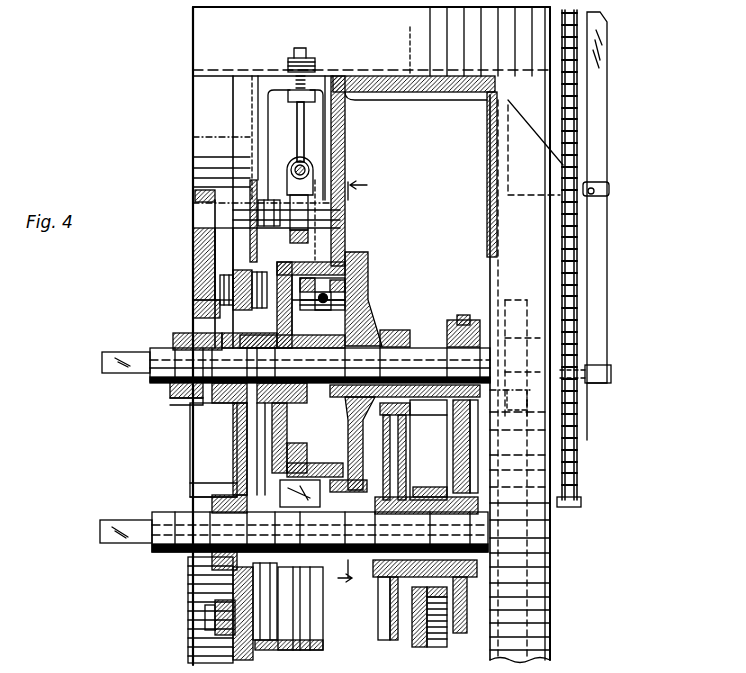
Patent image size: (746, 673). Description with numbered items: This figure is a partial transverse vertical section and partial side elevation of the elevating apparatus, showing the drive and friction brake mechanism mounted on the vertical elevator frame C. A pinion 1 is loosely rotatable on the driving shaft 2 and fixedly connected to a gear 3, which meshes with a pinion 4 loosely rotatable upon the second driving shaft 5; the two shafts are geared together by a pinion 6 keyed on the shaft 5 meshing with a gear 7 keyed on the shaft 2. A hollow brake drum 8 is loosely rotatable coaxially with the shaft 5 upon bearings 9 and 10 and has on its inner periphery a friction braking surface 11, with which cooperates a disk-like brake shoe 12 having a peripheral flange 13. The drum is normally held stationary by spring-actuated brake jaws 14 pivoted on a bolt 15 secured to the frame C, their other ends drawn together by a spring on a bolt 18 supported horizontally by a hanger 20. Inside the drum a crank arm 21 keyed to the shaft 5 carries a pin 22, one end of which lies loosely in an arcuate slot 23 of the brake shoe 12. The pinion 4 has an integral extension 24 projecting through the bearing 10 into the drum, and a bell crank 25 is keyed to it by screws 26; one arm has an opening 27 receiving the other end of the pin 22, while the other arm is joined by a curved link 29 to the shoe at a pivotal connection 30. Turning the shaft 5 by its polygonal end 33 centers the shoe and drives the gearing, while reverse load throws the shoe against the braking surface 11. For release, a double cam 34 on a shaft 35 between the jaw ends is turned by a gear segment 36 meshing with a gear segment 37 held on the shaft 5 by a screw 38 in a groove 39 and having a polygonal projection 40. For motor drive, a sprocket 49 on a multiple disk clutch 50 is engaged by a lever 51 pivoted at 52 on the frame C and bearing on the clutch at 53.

The pinion 1 is at (428, 490).
The driving shaft 2 is at (170, 550).
The gear 3 is at (410, 427).
The pinion 4 is at (393, 340).
The second driving shaft 5 is at (175, 350).
The pinion 6 is at (630, 298).
The gear 7 is at (193, 244).
The brake drum 8 is at (193, 276).
The bearing 9 is at (237, 414).
The bearing 10 is at (350, 340).
The friction braking surface 11 is at (333, 262).
The brake shoe 12 is at (300, 420).
The peripheral flange 13 is at (366, 254).
The brake jaws 14 is at (325, 580).
The bolt 15 is at (322, 645).
The bolt 18 is at (290, 166).
The hanger 20 is at (298, 132).
The crank arm 21 is at (376, 305).
The pin 22 is at (372, 292).
The arcuate slot 23 is at (220, 300).
The integral extension 24 is at (403, 415).
The bell crank 25 is at (407, 440).
The screws 26 is at (458, 345).
The opening 27 is at (372, 275).
The curved link 29 is at (240, 450).
The pivotal connection 30 is at (193, 325).
The polygonal end 33 is at (100, 356).
The double cam 34 is at (302, 222).
The shaft 35 is at (195, 222).
The gear segment 36 is at (193, 256).
The gear segment 37 is at (193, 288).
The screw 38 is at (195, 410).
The groove 39 is at (168, 385).
The polygonal projection 40 is at (152, 402).
The sprocket 49 is at (578, 437).
The multiple disk clutch 50 is at (581, 497).
The lever 51 is at (598, 160).
The pivot 52 is at (600, 190).
The engagement point 53 is at (612, 375).
The elevator frame C is at (190, 615).